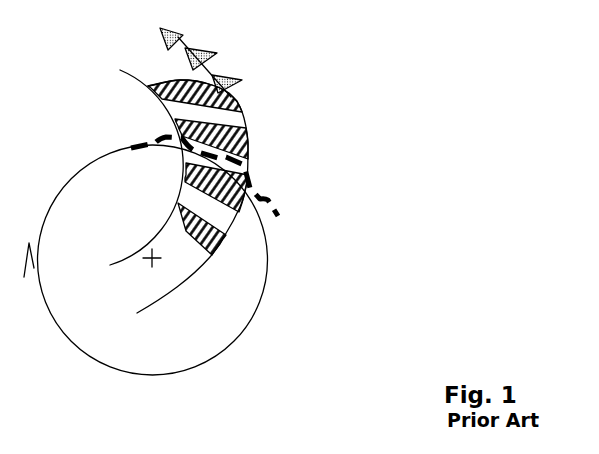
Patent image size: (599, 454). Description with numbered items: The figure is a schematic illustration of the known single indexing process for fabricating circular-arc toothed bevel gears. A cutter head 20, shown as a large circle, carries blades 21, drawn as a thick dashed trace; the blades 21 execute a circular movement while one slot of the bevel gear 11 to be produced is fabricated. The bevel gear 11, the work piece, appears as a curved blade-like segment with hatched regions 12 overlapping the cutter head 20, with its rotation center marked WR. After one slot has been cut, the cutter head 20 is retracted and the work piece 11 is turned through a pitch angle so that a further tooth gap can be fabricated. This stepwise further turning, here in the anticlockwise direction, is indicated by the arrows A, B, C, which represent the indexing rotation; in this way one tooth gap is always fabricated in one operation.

The bevel gear 11 is at (147, 62).
The hatched regions of blade 12 is at (236, 122).
The cutter head 20 is at (228, 330).
The blades 21 is at (282, 214).
The roller rotation center WR is at (147, 259).
The arrow A is at (195, 55).
The arrow B is at (209, 55).
The arrow C is at (236, 80).